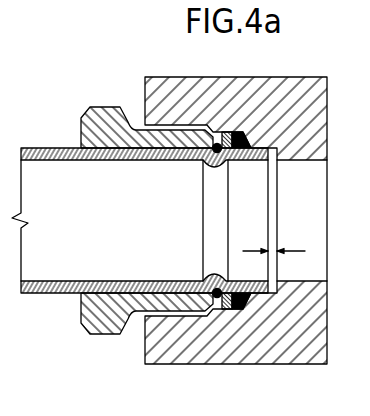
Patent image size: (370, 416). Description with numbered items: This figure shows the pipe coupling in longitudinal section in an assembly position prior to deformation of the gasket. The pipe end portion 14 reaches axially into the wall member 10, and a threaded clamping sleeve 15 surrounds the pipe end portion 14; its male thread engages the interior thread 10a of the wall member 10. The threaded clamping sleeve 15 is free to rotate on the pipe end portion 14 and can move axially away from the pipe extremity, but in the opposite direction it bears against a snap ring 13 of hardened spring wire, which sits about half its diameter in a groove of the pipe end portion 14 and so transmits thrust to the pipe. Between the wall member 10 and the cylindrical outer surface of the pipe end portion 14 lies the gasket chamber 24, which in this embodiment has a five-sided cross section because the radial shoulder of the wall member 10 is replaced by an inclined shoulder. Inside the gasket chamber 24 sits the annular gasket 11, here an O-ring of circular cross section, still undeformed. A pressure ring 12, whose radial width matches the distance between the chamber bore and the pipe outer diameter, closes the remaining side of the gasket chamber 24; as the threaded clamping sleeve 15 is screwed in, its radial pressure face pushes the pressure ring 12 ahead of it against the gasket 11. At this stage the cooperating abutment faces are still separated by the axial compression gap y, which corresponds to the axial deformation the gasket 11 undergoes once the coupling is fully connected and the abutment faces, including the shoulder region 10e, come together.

The wall member 10 is at (222, 220).
The interior thread 10a is at (184, 366).
The nut internal shoulder 10e is at (274, 288).
The annular gasket 11 is at (240, 307).
The pressure ring 12 is at (222, 310).
The snap ring 13 is at (252, 228).
The pipe end portion 14 is at (140, 194).
The threaded clamping sleeve 15 is at (106, 107).
The gasket chamber 24 is at (245, 147).
The axial compression gap y is at (274, 238).